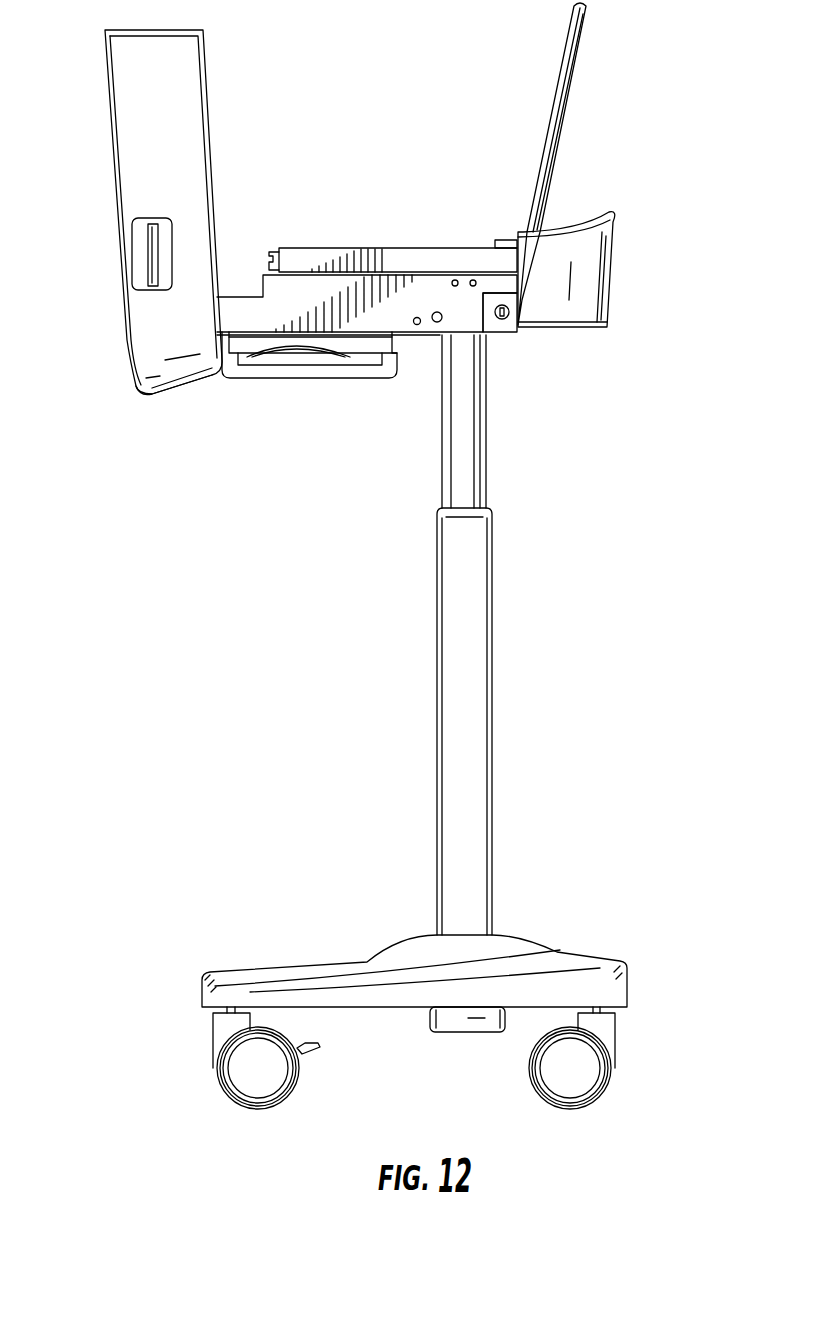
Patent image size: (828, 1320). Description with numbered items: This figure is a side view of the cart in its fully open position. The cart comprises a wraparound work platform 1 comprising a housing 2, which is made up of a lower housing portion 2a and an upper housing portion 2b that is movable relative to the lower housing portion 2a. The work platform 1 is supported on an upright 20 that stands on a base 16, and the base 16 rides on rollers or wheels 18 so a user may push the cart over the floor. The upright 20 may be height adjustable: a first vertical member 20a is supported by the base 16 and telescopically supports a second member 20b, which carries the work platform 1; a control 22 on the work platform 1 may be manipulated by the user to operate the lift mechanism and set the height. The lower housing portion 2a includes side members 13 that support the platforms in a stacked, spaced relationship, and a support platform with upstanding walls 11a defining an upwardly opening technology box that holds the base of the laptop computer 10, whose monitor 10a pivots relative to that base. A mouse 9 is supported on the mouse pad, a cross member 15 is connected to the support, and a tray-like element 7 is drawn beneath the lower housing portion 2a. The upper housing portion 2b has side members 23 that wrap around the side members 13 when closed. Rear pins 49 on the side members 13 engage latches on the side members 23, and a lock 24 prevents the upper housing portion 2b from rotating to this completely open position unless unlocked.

The wraparound work platform 1 is at (343, 120).
The housing 2 is at (101, 370).
The lower housing portion 2a is at (496, 336).
The upper housing portion 2b is at (143, 397).
The tray 7 is at (258, 380).
The mouse 9 is at (288, 352).
The laptop computer 10 is at (581, 55).
The monitor 10a is at (556, 172).
The upstanding walls 11a is at (300, 262).
The side members 13 is at (306, 320).
The cross member 15 is at (612, 298).
The base 16 is at (586, 972).
The rollers or wheels 18 is at (530, 1082).
The upright 20 is at (502, 620).
The first vertical member 20a is at (480, 733).
The second member 20b is at (466, 466).
The control 22 is at (137, 263).
The side members 23 is at (190, 100).
The lock 24 is at (507, 319).
The rear pin 49 is at (436, 324).